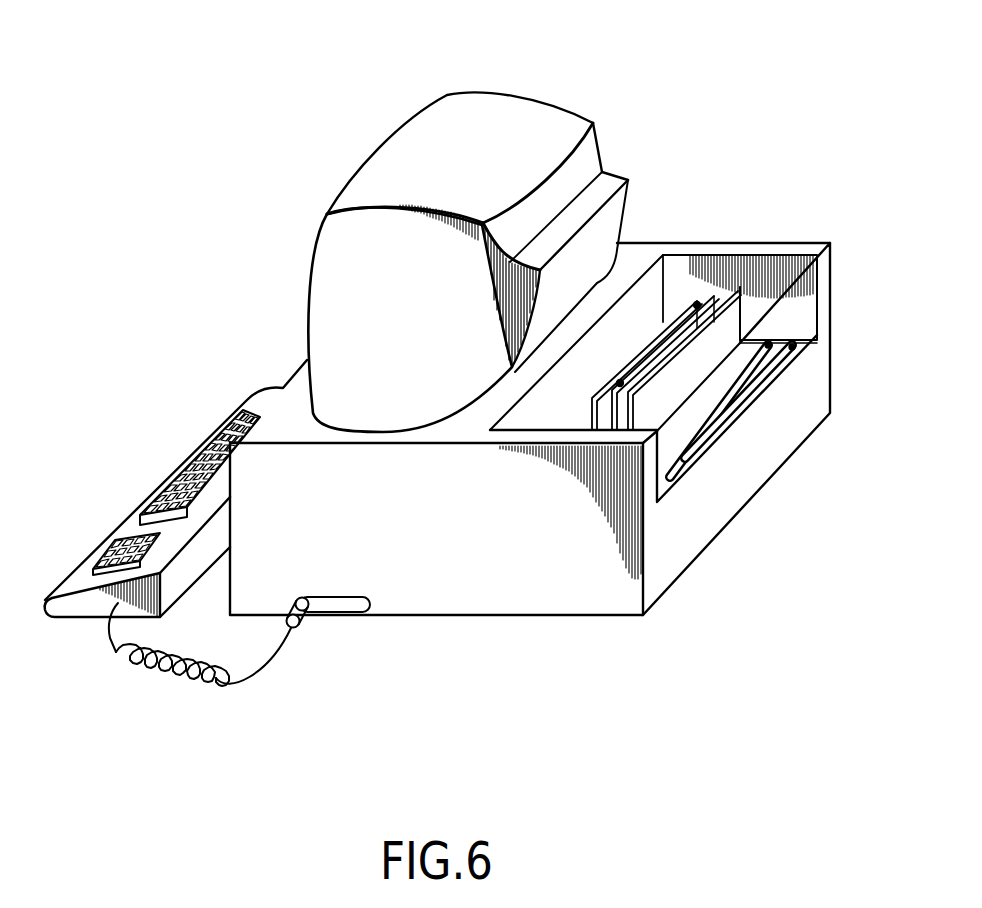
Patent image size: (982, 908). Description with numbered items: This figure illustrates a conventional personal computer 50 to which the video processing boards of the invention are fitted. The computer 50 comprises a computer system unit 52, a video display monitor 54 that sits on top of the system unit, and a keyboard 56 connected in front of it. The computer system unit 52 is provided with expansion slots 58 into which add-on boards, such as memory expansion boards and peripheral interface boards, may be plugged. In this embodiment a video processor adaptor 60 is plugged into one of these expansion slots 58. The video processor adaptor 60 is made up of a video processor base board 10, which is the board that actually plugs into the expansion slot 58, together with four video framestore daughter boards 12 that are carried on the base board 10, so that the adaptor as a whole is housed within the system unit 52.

The video processor base board 10 is at (692, 287).
The video framestore daughter boards 12 is at (767, 342).
The computer 50 is at (305, 208).
The computer system unit 52 is at (497, 593).
The video display monitor 54 is at (515, 122).
The keyboard 56 is at (217, 428).
The expansion slots 58 is at (808, 340).
The video processor adaptor 60 is at (722, 335).